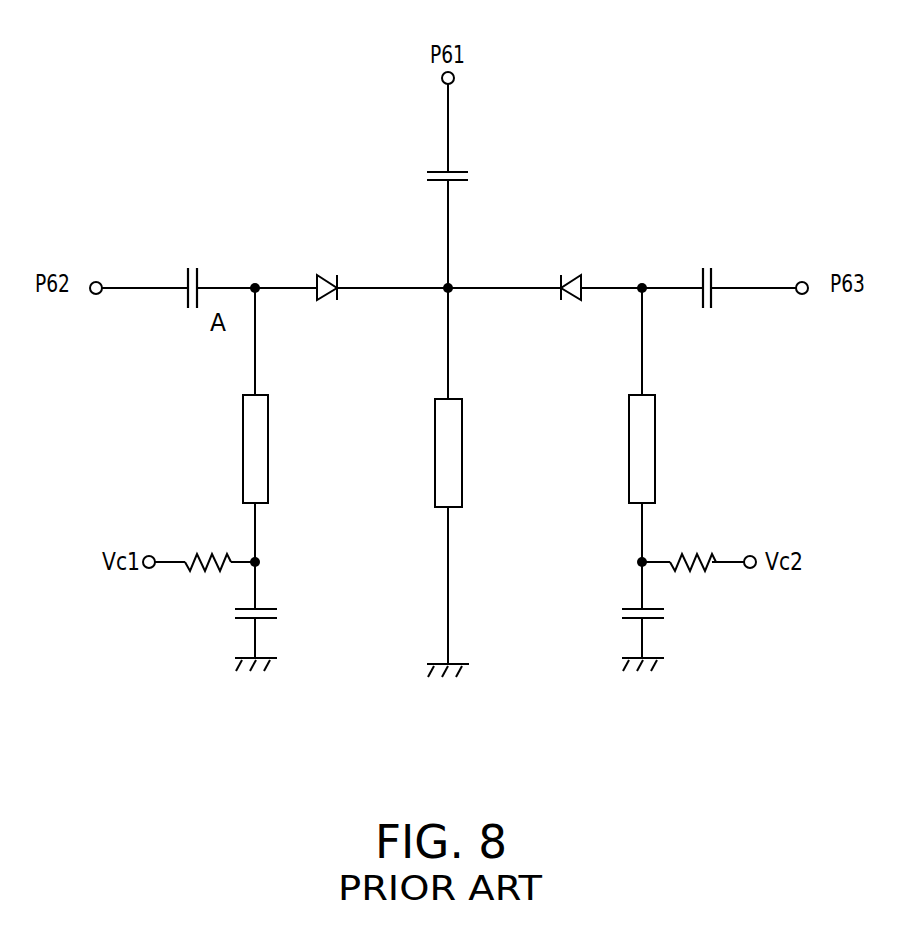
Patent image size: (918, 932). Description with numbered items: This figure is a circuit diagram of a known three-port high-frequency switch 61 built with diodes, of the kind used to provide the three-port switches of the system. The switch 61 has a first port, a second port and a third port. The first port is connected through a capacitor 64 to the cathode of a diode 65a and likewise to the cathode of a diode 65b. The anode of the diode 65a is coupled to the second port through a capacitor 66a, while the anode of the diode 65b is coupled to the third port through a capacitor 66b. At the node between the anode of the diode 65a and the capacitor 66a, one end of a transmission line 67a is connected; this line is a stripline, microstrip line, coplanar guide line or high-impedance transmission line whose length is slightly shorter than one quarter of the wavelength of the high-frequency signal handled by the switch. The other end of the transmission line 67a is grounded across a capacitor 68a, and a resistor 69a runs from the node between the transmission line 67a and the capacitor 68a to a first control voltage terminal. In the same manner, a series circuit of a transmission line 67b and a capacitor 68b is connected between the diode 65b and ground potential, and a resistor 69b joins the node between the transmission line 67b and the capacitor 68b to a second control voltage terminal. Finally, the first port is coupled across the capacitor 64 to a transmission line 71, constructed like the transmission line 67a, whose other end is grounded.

The high-frequency switch 61 is at (253, 118).
The capacitor 64 is at (464, 175).
The diode 65a is at (322, 261).
The diode 65b is at (575, 261).
The capacitor 66a is at (189, 265).
The capacitor 66b is at (707, 265).
The transmission line 67a is at (232, 449).
The transmission line 67b is at (669, 449).
The capacitor 68a is at (277, 618).
The capacitor 68b is at (623, 618).
The resistor 69a is at (208, 541).
The resistor 69b is at (693, 541).
The transmission line 71 is at (468, 453).